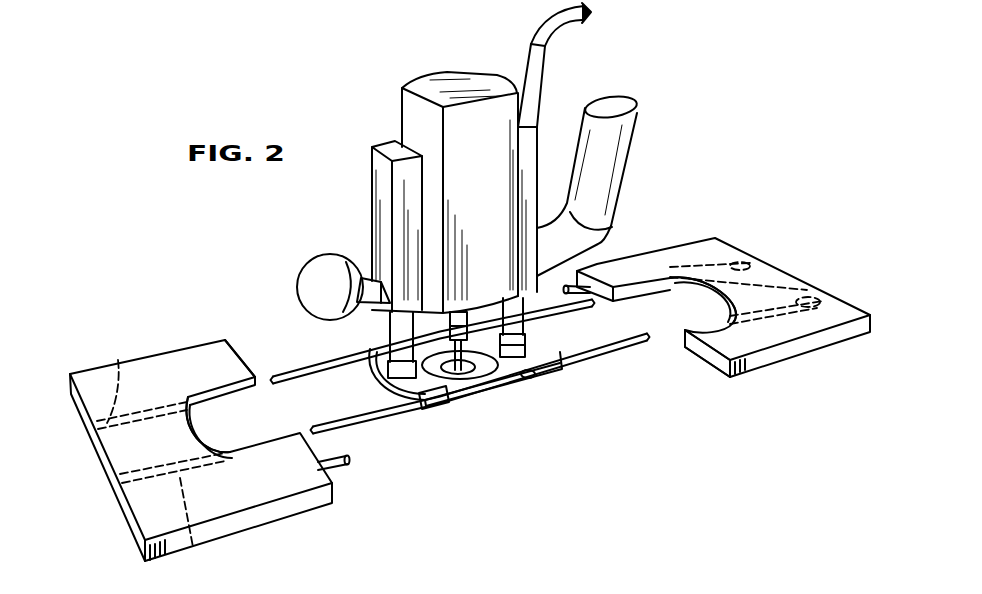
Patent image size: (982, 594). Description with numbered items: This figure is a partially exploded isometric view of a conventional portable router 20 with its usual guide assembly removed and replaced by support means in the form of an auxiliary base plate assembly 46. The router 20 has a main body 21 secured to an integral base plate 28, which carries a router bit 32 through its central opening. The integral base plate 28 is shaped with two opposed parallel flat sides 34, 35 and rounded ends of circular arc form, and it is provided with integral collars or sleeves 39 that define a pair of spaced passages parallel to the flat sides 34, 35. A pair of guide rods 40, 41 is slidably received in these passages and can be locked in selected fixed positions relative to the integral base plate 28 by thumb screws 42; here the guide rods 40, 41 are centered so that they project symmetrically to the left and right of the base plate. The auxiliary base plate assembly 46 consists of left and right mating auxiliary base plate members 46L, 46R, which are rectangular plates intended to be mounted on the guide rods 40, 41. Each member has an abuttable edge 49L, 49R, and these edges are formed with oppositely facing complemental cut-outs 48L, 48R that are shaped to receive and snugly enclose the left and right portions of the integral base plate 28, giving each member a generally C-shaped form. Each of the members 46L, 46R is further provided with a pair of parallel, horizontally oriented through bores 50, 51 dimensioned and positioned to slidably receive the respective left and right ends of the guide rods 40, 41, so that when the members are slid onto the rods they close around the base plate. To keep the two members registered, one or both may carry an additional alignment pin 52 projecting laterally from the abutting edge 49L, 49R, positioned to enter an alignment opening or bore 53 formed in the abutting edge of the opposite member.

The router 20 is at (578, 94).
The main body 21 is at (494, 192).
The integral base plate 28 is at (522, 378).
The router bit 32 is at (477, 396).
The flat side 34 is at (470, 408).
The flat side 35 is at (390, 318).
The collars or sleeves 39 is at (389, 342).
The guide rod 40 is at (630, 348).
The guide rod 41 is at (294, 378).
The thumb screws 42 is at (527, 336).
The auxiliary base plate assembly 46 is at (731, 225).
The left auxiliary base plate member 46L is at (137, 367).
The right auxiliary base plate member 46R is at (778, 277).
The cut-out 48L is at (230, 440).
The cut-out 48R is at (688, 332).
The abuttable edge 49L is at (228, 340).
The abuttable edge 49R is at (708, 352).
The through bore 50 is at (193, 545).
The through bore 51 is at (118, 360).
The alignment pin 52 is at (590, 275).
The alignment opening or bore 53 is at (714, 364).